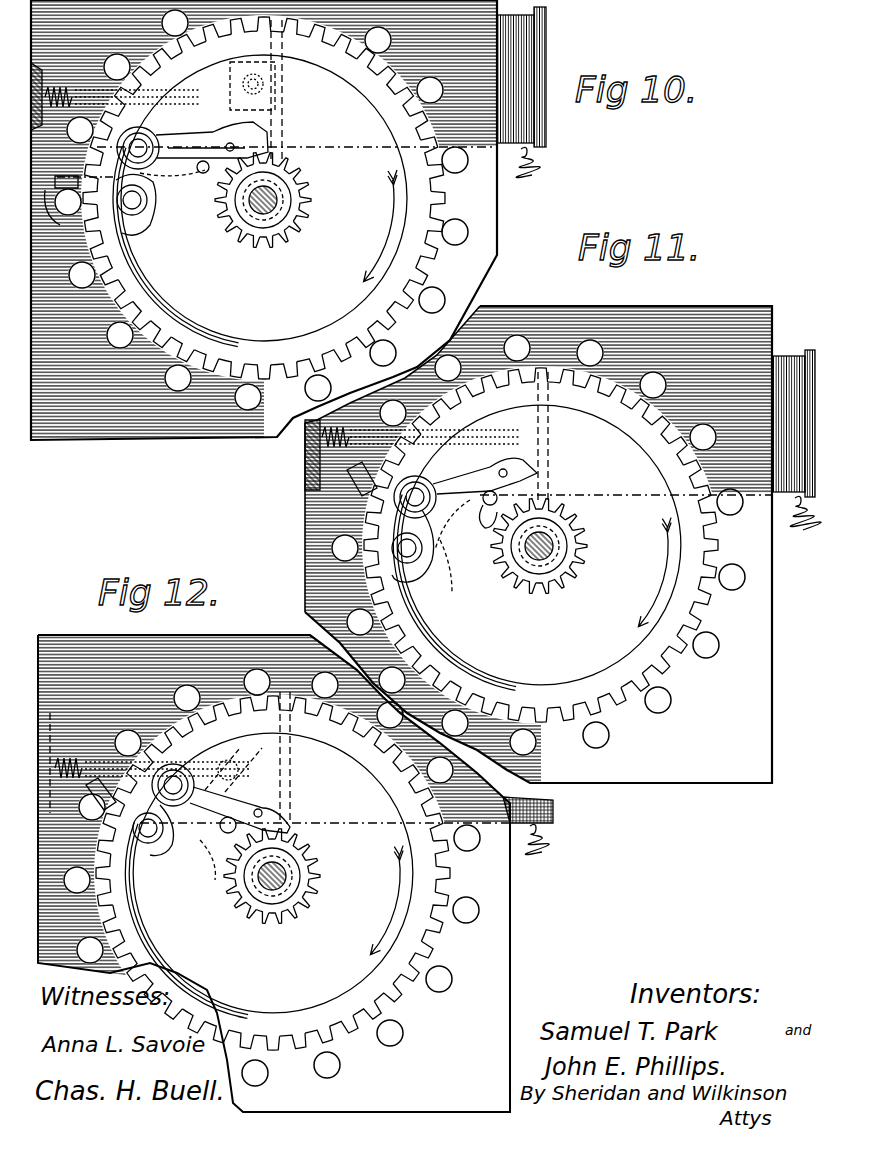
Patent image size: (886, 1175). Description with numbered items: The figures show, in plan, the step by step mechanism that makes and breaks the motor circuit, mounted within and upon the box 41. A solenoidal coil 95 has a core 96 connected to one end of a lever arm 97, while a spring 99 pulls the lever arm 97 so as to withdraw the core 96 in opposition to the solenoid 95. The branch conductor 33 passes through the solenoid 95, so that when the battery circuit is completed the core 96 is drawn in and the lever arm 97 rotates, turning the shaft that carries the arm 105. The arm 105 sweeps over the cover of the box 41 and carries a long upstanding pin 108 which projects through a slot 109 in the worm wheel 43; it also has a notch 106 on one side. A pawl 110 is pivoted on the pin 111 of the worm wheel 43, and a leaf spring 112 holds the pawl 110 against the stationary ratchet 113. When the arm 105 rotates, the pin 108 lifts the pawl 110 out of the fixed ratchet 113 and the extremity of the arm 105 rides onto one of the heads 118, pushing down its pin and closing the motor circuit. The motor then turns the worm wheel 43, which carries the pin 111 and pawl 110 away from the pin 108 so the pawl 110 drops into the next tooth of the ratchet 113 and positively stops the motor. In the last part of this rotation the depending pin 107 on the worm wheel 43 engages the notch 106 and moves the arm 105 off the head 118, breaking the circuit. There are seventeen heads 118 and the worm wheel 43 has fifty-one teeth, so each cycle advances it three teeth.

In FIG. 10, the branch conductor 33 is at (534, 172).
In FIG. 11, the branch conductor 33 is at (800, 531).
In FIG. 12, the branch conductor 33 is at (555, 848).
In FIG. 10, the box 41 is at (264, 220).
In FIG. 11, the box 41 is at (538, 544).
In FIG. 12, the box 41 is at (274, 873).
In FIG. 10, the worm wheel 43 is at (438, 205).
In FIG. 11, the worm wheel 43 is at (697, 626).
In FIG. 12, the worm wheel 43 is at (430, 948).
In FIG. 10, the solenoidal coil 95 is at (521, 77).
In FIG. 11, the solenoidal coil 95 is at (793, 423).
In FIG. 12, the solenoidal coil 95 is at (520, 828).
In FIG. 10, the core 96 is at (268, 86).
In FIG. 12, the core 96 is at (272, 752).
In FIG. 10, the lever arm 97 is at (268, 105).
In FIG. 11, the lever arm 97 is at (548, 470).
In FIG. 12, the lever arm 97 is at (270, 776).
In FIG. 10, the spring 99 is at (46, 82).
In FIG. 11, the spring 99 is at (305, 456).
In FIG. 12, the spring 99 is at (62, 760).
In FIG. 10, the arm 105 is at (99, 211).
In FIG. 11, the arm 105 is at (457, 557).
In FIG. 12, the arm 105 is at (150, 849).
In FIG. 11, the notch 106 is at (430, 602).
In FIG. 10, the pin 107 is at (138, 208).
In FIG. 11, the pin 107 is at (397, 556).
In FIG. 12, the pin 107 is at (150, 842).
In FIG. 10, the upstanding pin 108 is at (202, 174).
In FIG. 11, the slot 109 is at (486, 522).
In FIG. 10, the pawl 110 is at (255, 118).
In FIG. 11, the pawl 110 is at (520, 462).
In FIG. 12, the pawl 110 is at (288, 812).
In FIG. 10, the pin 111 is at (85, 152).
In FIG. 11, the pin 111 is at (360, 496).
In FIG. 10, the leaf spring 112 is at (153, 140).
In FIG. 11, the leaf spring 112 is at (434, 505).
In FIG. 10, the ratchet 113 is at (276, 245).
In FIG. 11, the ratchet 113 is at (565, 580).
In FIG. 12, the ratchet 113 is at (278, 916).
In FIG. 10, the head 118 is at (236, 399).
In FIG. 11, the head 118 is at (732, 488).
In FIG. 12, the head 118 is at (88, 818).